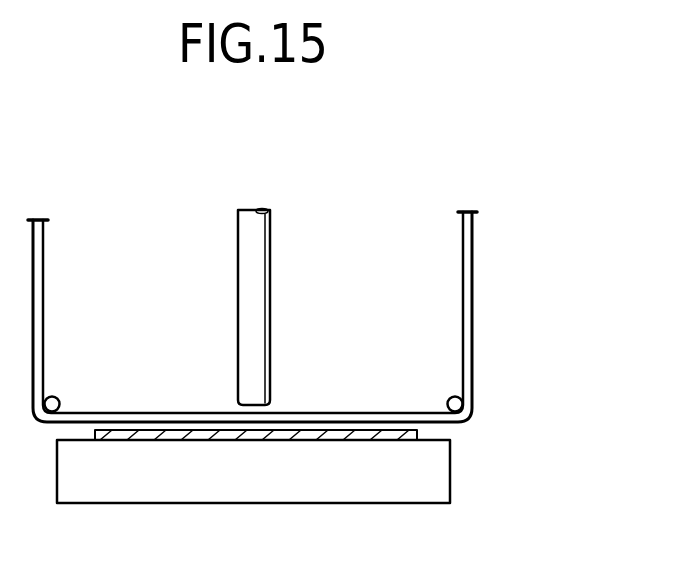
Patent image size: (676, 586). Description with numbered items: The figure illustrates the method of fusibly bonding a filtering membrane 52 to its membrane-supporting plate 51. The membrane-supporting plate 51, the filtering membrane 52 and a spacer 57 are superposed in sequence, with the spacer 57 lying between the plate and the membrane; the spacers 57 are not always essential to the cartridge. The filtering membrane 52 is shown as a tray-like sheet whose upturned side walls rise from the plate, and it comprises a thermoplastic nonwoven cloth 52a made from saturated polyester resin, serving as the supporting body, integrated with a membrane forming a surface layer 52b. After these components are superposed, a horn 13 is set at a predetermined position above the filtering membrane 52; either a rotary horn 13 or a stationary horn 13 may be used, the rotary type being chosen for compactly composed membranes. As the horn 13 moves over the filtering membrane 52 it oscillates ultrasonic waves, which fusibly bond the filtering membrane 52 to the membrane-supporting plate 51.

The horn 13 is at (257, 279).
The membrane-supporting plate 51 is at (412, 471).
The filtering membrane 52 is at (482, 264).
The thermoplastic nonwoven cloth 52a is at (474, 300).
The surface layer 52b is at (464, 348).
The spacer 57 is at (418, 433).